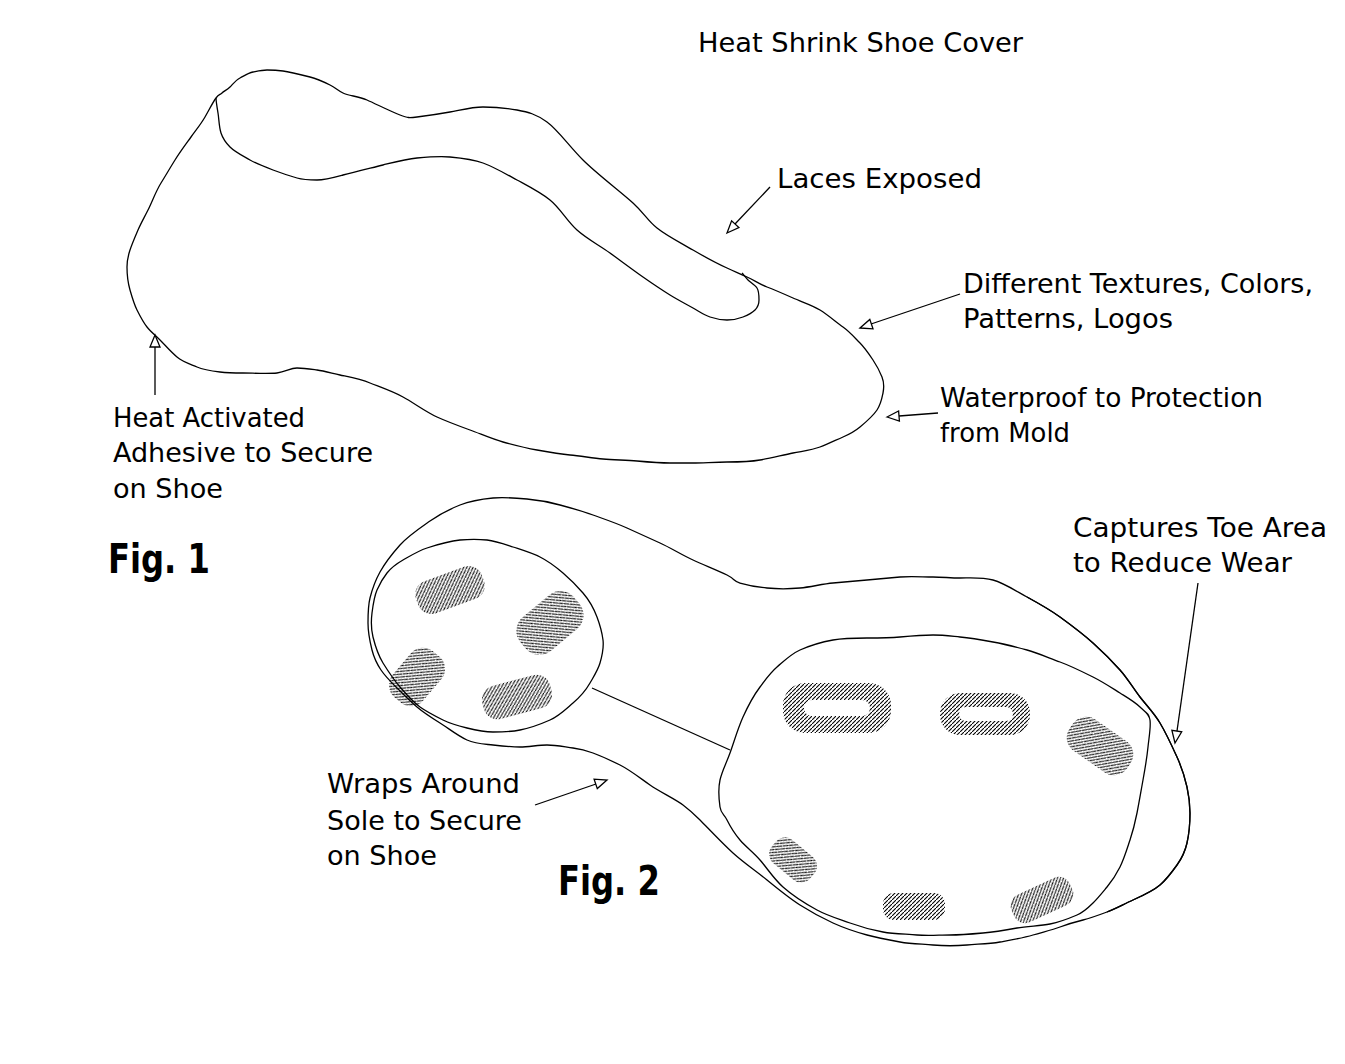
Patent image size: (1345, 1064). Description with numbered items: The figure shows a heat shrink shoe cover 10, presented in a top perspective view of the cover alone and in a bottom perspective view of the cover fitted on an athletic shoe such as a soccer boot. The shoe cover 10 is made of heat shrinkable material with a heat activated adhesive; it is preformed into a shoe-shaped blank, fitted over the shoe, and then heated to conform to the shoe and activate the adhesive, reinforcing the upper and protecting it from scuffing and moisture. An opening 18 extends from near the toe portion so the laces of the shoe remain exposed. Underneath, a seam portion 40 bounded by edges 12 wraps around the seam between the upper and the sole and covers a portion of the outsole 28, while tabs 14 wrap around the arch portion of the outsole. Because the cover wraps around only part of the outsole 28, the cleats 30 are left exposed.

In FIG. 1, the shoe cover 10 is at (584, 89).
In FIG. 1, the opening 18 is at (603, 213).
In FIG. 2, the tabs 14 is at (667, 683).
In FIG. 2, the edges 12 is at (1077, 667).
In FIG. 2, the outsole 28 is at (907, 680).
In FIG. 2, the cleats 30 is at (980, 700).
In FIG. 2, the seam portion 40 is at (1167, 826).